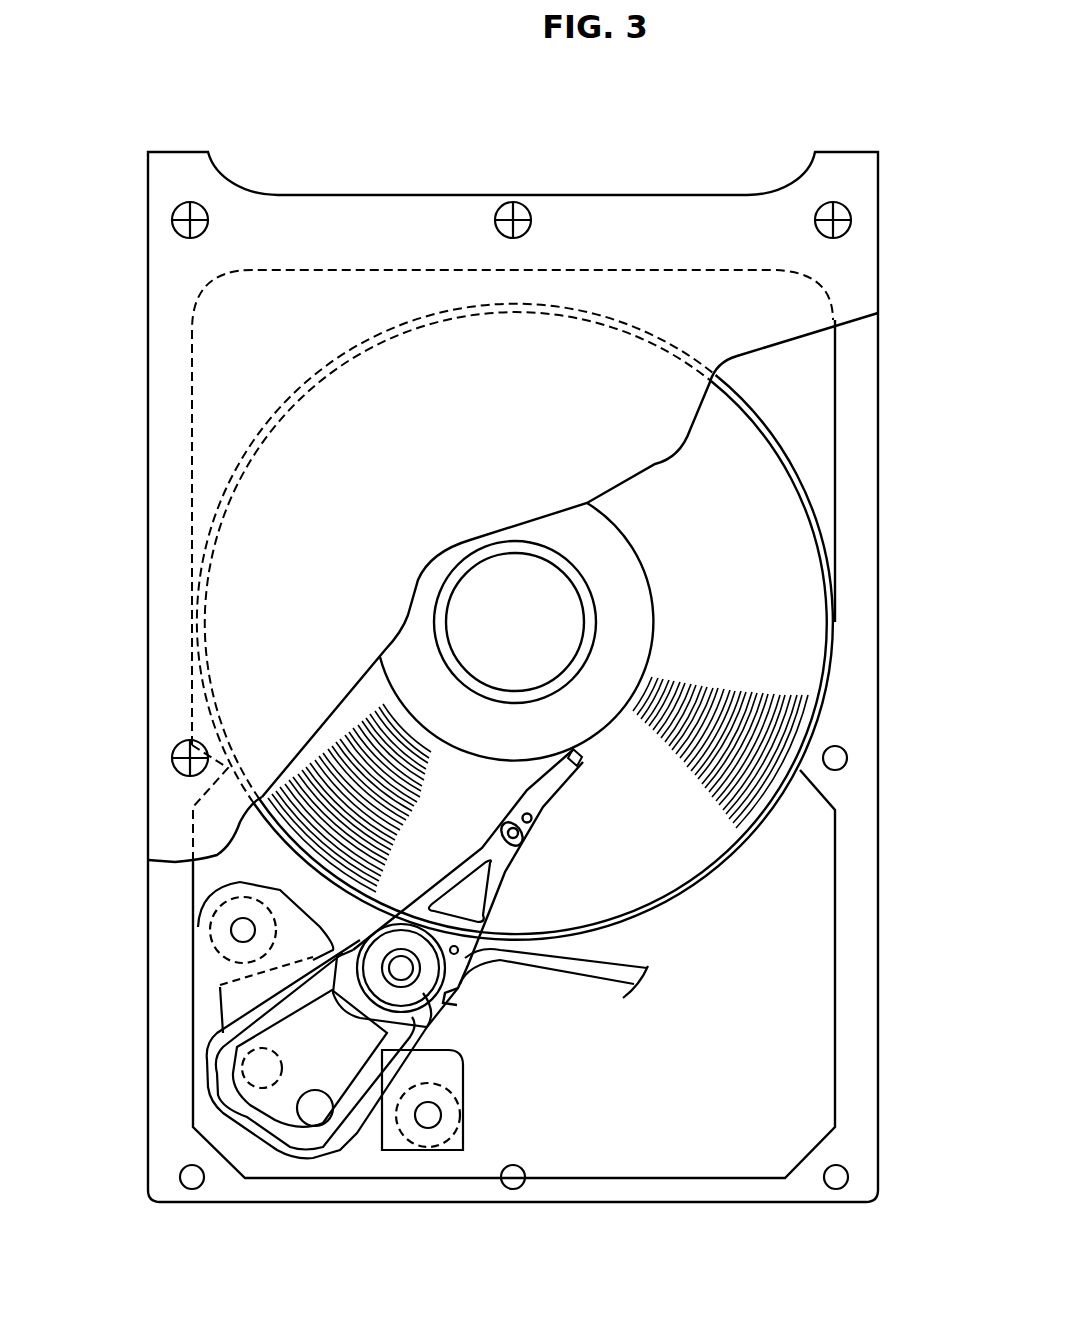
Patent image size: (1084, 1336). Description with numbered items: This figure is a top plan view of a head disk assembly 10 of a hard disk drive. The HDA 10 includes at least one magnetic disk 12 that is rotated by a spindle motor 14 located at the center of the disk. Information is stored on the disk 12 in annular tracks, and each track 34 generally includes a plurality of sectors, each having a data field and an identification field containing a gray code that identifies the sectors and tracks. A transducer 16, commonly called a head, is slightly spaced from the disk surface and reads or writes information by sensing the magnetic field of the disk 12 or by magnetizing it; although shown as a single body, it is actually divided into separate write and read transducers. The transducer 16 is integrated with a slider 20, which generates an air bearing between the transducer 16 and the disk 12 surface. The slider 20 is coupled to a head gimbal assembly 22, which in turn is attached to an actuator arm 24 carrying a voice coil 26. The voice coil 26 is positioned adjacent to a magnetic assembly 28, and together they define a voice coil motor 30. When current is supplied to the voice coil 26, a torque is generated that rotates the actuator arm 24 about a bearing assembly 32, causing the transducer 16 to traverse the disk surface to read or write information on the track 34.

The head disk assembly 10 is at (698, 130).
The magnetic disk 12 is at (783, 555).
The spindle motor 14 is at (488, 597).
The transducer 16 is at (583, 760).
The slider 20 is at (552, 787).
The head gimbal assembly 22 is at (512, 880).
The actuator arm 24 is at (305, 988).
The voice coil 26 is at (223, 1060).
The magnetic assembly 28 is at (243, 1003).
The voice coil motor 30 is at (368, 1133).
The bearing assembly 32 is at (410, 978).
The track 34 is at (330, 777).